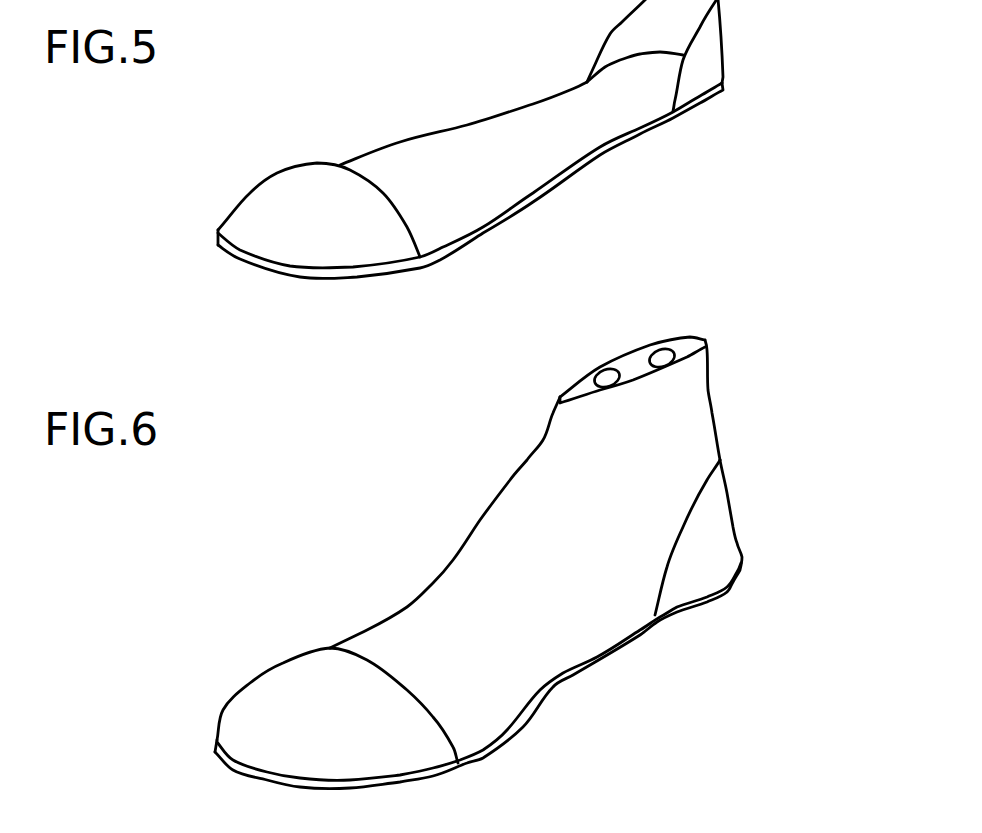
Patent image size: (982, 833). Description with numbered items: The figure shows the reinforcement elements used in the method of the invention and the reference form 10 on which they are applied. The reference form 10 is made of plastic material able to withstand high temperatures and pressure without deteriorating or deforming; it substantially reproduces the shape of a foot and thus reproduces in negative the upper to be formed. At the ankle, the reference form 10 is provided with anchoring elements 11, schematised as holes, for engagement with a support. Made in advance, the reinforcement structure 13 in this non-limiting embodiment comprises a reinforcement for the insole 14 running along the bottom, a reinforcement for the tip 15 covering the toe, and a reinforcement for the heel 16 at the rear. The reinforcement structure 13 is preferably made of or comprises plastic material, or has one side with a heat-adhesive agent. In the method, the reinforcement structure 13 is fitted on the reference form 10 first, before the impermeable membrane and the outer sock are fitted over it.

In FIG. 6, the reference form 10 is at (668, 430).
In FIG. 6, the anchoring elements 11 is at (610, 378).
In FIG. 5, the reinforcement structure 13 is at (545, 90).
In FIG. 6, the reinforcement structure 13 is at (585, 677).
In FIG. 5, the reinforcement for the insole 14 is at (577, 151).
In FIG. 6, the reinforcement for the insole 14 is at (642, 623).
In FIG. 5, the reinforcement for the tip 15 is at (287, 220).
In FIG. 6, the reinforcement for the tip 15 is at (385, 750).
In FIG. 5, the reinforcement for the heel 16 is at (712, 50).
In FIG. 6, the reinforcement for the heel 16 is at (708, 543).